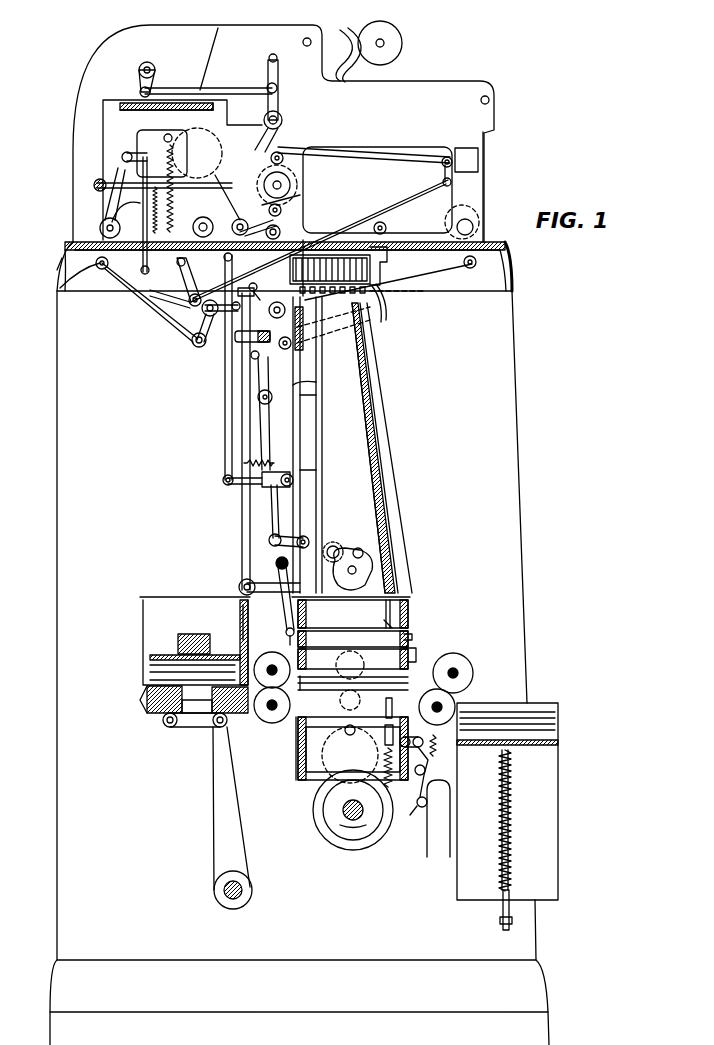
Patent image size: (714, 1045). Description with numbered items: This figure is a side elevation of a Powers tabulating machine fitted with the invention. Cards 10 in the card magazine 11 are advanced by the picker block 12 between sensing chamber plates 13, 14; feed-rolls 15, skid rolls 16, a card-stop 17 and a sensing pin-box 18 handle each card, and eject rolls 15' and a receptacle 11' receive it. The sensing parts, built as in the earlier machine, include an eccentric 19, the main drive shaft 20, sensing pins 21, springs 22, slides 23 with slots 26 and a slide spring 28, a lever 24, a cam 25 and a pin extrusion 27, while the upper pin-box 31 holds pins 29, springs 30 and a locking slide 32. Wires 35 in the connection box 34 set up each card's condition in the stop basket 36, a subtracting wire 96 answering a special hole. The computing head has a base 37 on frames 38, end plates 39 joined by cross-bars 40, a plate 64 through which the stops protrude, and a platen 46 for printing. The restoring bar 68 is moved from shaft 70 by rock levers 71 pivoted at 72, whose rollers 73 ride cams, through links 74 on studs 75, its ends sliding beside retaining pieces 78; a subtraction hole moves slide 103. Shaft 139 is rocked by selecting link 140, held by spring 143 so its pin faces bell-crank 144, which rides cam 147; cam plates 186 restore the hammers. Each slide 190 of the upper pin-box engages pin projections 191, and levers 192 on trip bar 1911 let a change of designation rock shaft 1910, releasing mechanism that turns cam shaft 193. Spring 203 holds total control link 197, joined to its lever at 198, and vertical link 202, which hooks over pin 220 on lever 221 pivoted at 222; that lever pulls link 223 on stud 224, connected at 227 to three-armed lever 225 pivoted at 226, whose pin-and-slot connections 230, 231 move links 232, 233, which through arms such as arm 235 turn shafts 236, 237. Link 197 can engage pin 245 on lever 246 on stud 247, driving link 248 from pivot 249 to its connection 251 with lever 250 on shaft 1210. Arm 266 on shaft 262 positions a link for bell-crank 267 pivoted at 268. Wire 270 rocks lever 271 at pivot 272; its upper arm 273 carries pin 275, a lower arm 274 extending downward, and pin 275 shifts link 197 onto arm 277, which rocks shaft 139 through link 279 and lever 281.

The cards 10 is at (195, 657).
The card magazine 11 is at (195, 641).
The receptacle 11' is at (528, 816).
The picker block 12 is at (155, 722).
The sensing chamber plate 13 is at (304, 693).
The sensing chamber plate 14 is at (330, 700).
The feed-rolls 15 is at (272, 686).
The eject rolls 15' is at (461, 689).
The skid rolls 16 is at (350, 664).
The card-stop 17 is at (412, 664).
The sensing pin-box 18 is at (296, 778).
The eccentric 19 is at (385, 835).
The main drive shaft 20 is at (343, 812).
The sensing pins 21 is at (393, 708).
The springs 22 is at (410, 780).
The slides 23 is at (353, 748).
The lever 24 is at (415, 815).
The cam 25 is at (443, 815).
The slots 26 is at (386, 755).
The pin extrusion 27 is at (385, 735).
The slide spring 28 is at (440, 760).
The pins 29 is at (395, 626).
The springs 30 is at (392, 612).
The upper pin-box 31 is at (412, 640).
The locking slide 32 is at (353, 659).
The connection box 34 is at (405, 494).
The wires 35 is at (318, 492).
The stop basket 36 is at (378, 272).
The base 37 is at (466, 293).
The frames 38 is at (385, 268).
The end plates 39 is at (365, 147).
The connecting cross-bars 40 is at (101, 160).
The platen 46 is at (402, 50).
The plate 64 is at (381, 307).
The restoring bar 68 is at (128, 102).
The revolving shaft 70 is at (292, 178).
The rock levers 71 is at (193, 153).
The pivot 72 is at (196, 222).
The rollers 73 is at (214, 170).
The links 74 is at (166, 112).
The studs 75 is at (212, 111).
The retaining pieces 78 is at (157, 70).
The subtracting wire 96 is at (385, 455).
The slide 103 is at (212, 90).
The shaft 139 is at (98, 228).
The selecting link 140 is at (95, 185).
The spring 143 is at (132, 215).
The bell-crank 144 is at (283, 210).
The cam 147 is at (305, 194).
The cam plates 186 is at (280, 100).
The slide 190 is at (340, 618).
The projections 191 is at (388, 639).
The levers 192 is at (288, 625).
The shaft 193 is at (370, 560).
The total control link 197 is at (242, 522).
The connection 198 is at (238, 585).
The link 202 is at (270, 535).
The spring 203 is at (245, 460).
The pin 220 is at (262, 485).
The lever 221 is at (228, 486).
The pivot 222 is at (316, 467).
The link 223 is at (225, 412).
The stud 224 is at (223, 478).
The three-armed lever 225 is at (208, 272).
The pivot 226 is at (176, 286).
The connection 227 is at (233, 253).
The pin and slot connection 230 is at (120, 270).
The pin and slot connection 231 is at (204, 310).
The link 232 is at (135, 205).
The link 233 is at (425, 192).
The arm 235 is at (442, 178).
The shaft 236 is at (120, 150).
The shaft 237 is at (445, 156).
The pin 245 is at (254, 329).
The lever 246 is at (265, 300).
The stud 247 is at (277, 300).
The link 248 is at (395, 298).
The pivot 249 is at (298, 348).
The lever 250 is at (464, 262).
The connection 251 is at (512, 268).
The shaft 262 is at (280, 234).
The arm 266 is at (285, 225).
The bell-crank 267 is at (280, 155).
The pivot 268 is at (264, 120).
The wire 270 is at (315, 422).
The lever 271 is at (312, 397).
The pivot 272 is at (312, 383).
The upwardly extending arm 273 is at (258, 392).
The downwardly extending arm 274 is at (260, 425).
The pin 275 is at (252, 360).
The arm 277 is at (201, 340).
The link 279 is at (150, 300).
The lever 281 is at (57, 262).
The shaft 1210 is at (473, 225).
The shaft 1910 is at (276, 562).
The trip bar 1911 is at (242, 628).